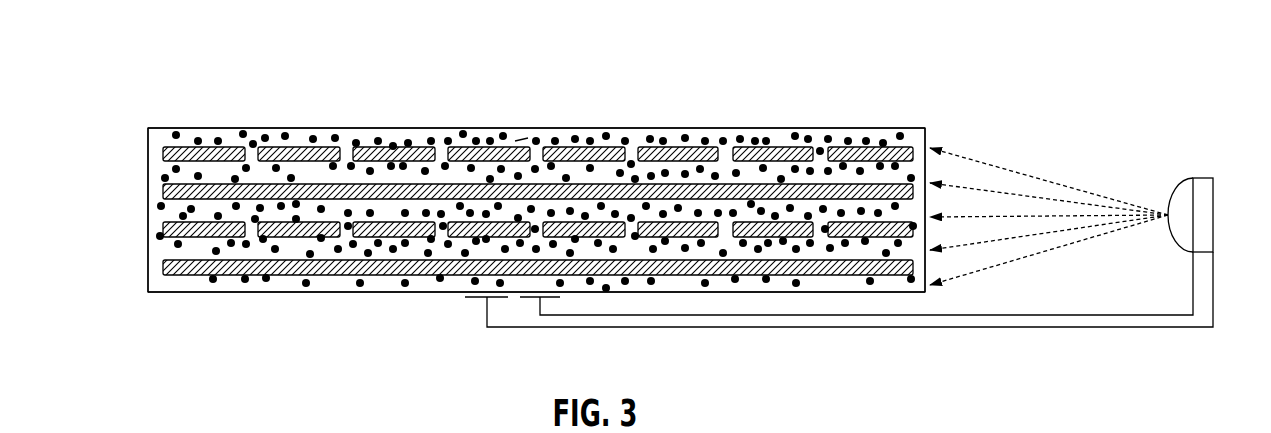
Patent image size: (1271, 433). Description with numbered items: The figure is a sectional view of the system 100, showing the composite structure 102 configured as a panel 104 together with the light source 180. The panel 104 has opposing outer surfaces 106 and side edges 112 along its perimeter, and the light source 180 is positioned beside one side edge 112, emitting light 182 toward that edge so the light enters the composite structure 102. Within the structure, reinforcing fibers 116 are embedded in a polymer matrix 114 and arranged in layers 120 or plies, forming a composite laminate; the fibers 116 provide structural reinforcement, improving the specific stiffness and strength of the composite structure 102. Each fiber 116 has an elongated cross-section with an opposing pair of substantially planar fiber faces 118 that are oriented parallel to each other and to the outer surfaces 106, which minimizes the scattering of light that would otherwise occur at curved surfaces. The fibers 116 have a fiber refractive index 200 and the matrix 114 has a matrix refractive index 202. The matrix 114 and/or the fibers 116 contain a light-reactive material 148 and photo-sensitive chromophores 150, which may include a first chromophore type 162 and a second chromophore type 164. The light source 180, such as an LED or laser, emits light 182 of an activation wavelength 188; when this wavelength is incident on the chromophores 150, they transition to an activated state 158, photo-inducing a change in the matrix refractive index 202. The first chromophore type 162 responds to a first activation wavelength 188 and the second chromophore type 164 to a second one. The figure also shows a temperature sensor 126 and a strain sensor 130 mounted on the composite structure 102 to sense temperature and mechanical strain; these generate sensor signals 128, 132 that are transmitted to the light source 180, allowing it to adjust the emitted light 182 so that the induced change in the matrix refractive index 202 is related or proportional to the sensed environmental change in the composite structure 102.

The system 100 is at (1086, 80).
The composite structure 102 is at (143, 287).
The panel 104 is at (144, 134).
The outer surfaces 106 is at (223, 294).
The side edge 112 is at (148, 215).
The polymer matrix 114 is at (741, 138).
The reinforcing fibers 116 is at (358, 150).
The planar fiber faces 118 is at (640, 163).
The layers 120 is at (163, 186).
The temperature sensor 126 is at (473, 299).
The sensor signal 128 is at (700, 328).
The strain sensor 130 is at (527, 299).
The sensor signal 132 is at (763, 316).
The light-reactive material 148 is at (293, 132).
The chromophores 150 is at (505, 135).
The activated state 158 is at (685, 138).
The first chromophore type 162 is at (796, 136).
The second chromophore type 164 is at (899, 135).
The light source 180 is at (1209, 175).
The light 182 is at (1054, 172).
The activation wavelength 188 is at (1038, 253).
The fiber refractive index 200 is at (388, 147).
The matrix refractive index 202 is at (520, 140).